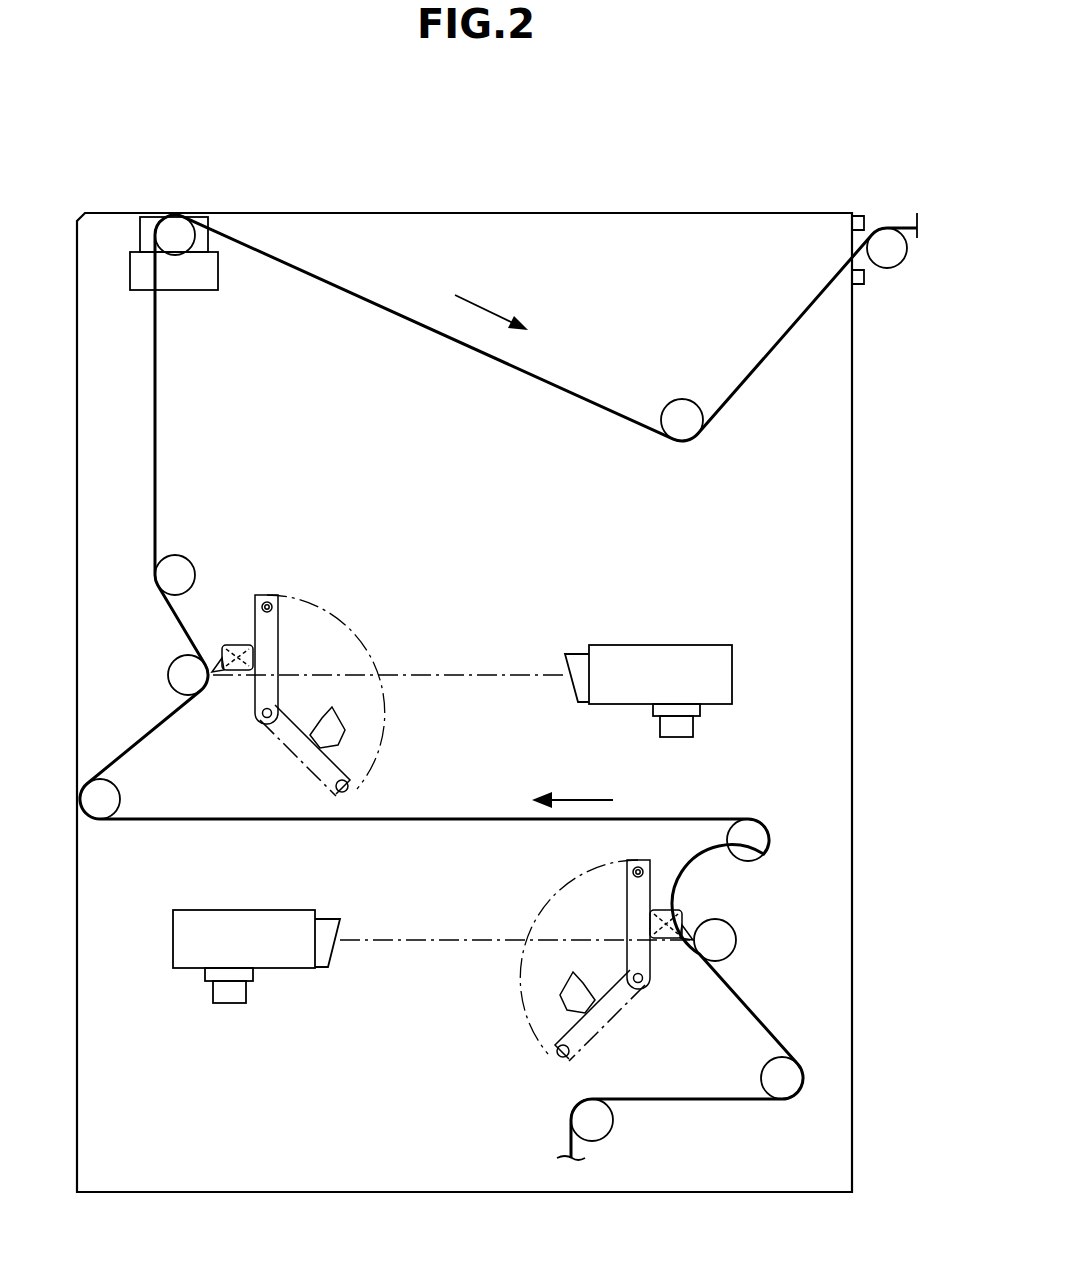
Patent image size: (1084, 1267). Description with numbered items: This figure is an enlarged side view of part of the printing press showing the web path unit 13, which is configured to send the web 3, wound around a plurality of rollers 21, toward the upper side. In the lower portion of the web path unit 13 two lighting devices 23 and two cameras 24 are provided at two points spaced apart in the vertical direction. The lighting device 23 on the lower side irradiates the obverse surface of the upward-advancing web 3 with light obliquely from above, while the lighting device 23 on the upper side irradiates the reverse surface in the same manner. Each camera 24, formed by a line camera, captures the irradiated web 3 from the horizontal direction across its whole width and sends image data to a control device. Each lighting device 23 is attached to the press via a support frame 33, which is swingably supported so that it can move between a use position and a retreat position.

The web path unit 13 is at (152, 160).
The web 3 is at (468, 818).
The rollers 21 is at (178, 255).
The lighting device 23 is at (218, 645).
The camera 24 is at (671, 632).
The support frame 33 is at (295, 660).